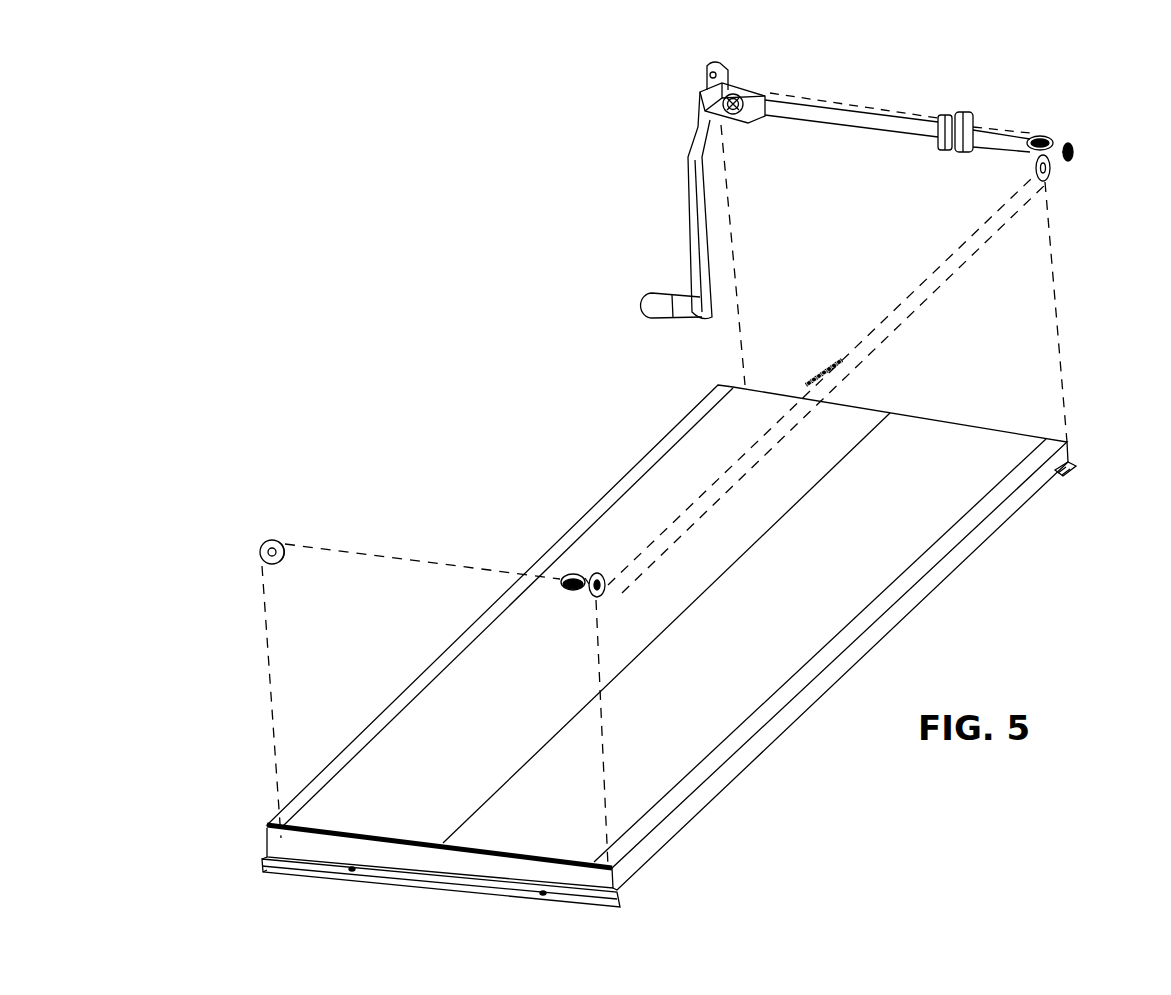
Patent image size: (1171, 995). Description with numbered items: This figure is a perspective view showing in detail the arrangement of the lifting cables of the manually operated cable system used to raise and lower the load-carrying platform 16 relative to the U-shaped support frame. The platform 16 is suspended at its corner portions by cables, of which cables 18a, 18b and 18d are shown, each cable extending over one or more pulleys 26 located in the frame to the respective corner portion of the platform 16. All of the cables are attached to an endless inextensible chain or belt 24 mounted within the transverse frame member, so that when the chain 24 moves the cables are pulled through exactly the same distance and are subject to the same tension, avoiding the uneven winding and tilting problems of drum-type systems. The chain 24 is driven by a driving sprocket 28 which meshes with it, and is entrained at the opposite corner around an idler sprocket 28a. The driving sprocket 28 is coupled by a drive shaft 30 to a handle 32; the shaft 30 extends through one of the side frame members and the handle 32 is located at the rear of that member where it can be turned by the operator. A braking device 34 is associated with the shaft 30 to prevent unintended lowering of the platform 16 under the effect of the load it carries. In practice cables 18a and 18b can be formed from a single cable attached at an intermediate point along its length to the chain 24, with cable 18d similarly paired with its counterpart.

The load-carrying platform 16 is at (912, 648).
The cable 18a is at (733, 232).
The cable 18b is at (1056, 308).
The cable 18d is at (270, 663).
The endless inextensible chain or belt 24 is at (823, 372).
The pulley 26 is at (738, 122).
The driving sprocket 28 is at (1075, 152).
The idler sprocket 28a is at (576, 573).
The drive shaft 30 is at (866, 116).
The handle 32 is at (692, 223).
The braking device 34 is at (960, 118).